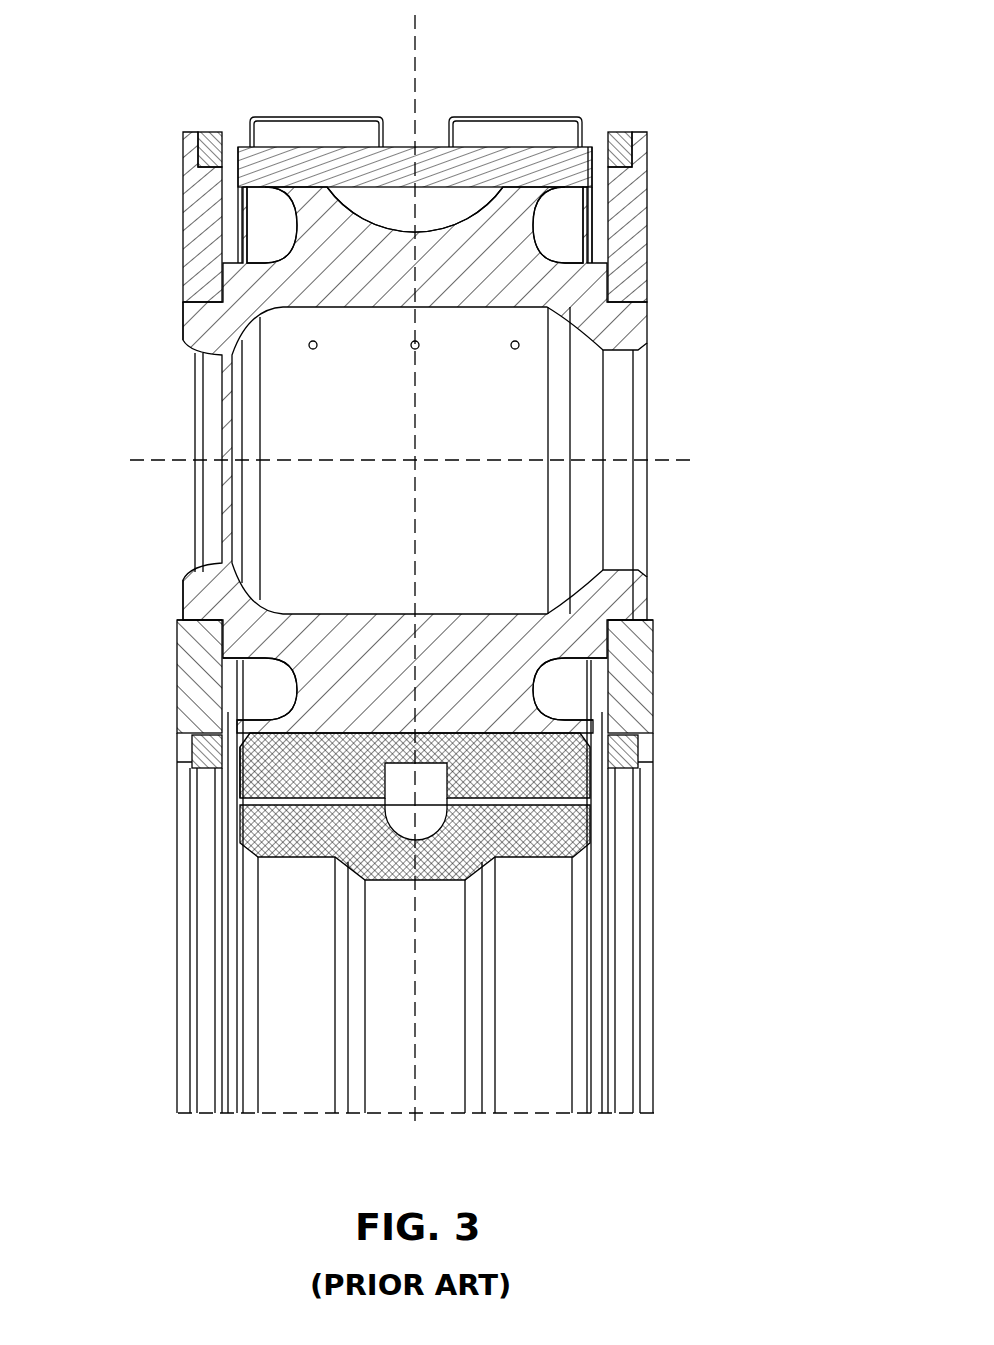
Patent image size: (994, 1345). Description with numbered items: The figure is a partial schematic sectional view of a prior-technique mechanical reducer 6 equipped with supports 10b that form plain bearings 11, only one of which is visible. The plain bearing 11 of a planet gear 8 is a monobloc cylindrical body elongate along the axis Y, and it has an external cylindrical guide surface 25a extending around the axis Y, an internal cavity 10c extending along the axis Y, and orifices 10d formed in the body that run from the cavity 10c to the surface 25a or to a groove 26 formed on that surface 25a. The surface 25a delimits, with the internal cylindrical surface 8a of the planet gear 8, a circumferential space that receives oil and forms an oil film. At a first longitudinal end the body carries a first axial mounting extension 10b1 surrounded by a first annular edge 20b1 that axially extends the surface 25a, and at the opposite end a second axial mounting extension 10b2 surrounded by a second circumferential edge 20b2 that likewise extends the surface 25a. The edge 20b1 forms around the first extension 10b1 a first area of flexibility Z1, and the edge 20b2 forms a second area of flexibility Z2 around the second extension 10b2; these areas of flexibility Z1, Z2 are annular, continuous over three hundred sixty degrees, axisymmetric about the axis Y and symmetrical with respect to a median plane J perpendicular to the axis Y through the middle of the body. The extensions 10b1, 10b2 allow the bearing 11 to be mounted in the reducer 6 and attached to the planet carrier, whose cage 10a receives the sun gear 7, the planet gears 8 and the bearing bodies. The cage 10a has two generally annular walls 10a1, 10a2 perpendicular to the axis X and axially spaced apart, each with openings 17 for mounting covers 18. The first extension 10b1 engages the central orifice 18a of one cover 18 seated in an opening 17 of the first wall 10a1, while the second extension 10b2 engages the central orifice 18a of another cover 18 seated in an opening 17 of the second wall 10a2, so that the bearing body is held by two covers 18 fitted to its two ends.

The mechanical reducer 6 is at (684, 164).
The sun gear 7 is at (565, 832).
The planet gear 8 is at (590, 112).
The internal cylindrical surface of the bearing 8a is at (242, 764).
The cage 10a is at (435, 581).
The first annular wall 10a1 is at (200, 135).
The second annular wall 10a2 is at (618, 808).
The support 10b is at (676, 305).
The first axial mounting extension 10b1 is at (259, 263).
The second axial mounting extension 10b2 is at (575, 248).
The internal cavity 10c is at (371, 535).
The orifices 10d is at (316, 349).
The plain bearing 11 is at (600, 195).
The openings 17 is at (192, 740).
The covers 18 is at (203, 643).
The central orifice 18a is at (214, 620).
The first annular edge 20b1 is at (250, 117).
The second circumferential edge 20b2 is at (578, 717).
The external cylindrical guide surface 25a is at (540, 185).
The groove 26 is at (388, 198).
The median plane J is at (418, 37).
The axis X is at (634, 1115).
The axis Y is at (680, 458).
The first area of flexibility Z1 is at (262, 683).
The second area of flexibility Z2 is at (574, 683).